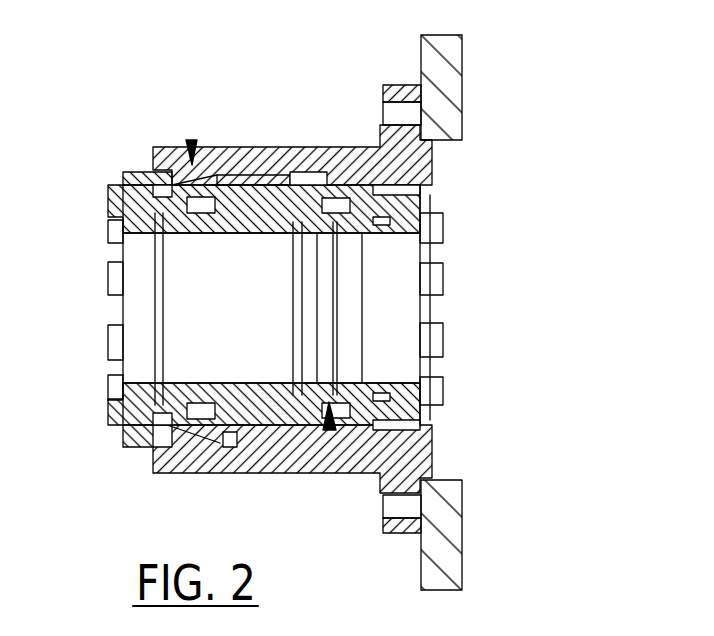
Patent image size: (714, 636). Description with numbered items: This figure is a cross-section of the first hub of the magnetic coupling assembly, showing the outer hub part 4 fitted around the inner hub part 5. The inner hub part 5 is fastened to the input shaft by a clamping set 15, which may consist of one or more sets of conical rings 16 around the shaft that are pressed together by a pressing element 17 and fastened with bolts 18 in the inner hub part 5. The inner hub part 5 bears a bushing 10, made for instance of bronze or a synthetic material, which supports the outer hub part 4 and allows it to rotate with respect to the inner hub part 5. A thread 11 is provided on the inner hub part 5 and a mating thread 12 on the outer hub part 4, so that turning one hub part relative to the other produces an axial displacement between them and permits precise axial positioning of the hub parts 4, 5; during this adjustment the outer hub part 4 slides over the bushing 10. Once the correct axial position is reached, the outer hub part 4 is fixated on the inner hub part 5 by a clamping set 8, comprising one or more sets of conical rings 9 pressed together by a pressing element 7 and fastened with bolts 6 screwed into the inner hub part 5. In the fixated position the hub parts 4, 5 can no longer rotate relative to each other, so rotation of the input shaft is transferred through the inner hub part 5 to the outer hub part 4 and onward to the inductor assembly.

The outer hub part 4 is at (330, 148).
The inner hub part 5 is at (252, 412).
The bolts 6 is at (122, 200).
The pressing element 7 is at (133, 180).
The clamping set 8 is at (190, 140).
The conical rings 9 is at (213, 178).
The bushing 10 is at (358, 183).
The thread 11 is at (260, 178).
The thread 12 is at (283, 165).
The clamping set 15 is at (328, 430).
The conical rings 16 is at (320, 235).
The pressing element 17 is at (400, 253).
The bolts 18 is at (425, 203).